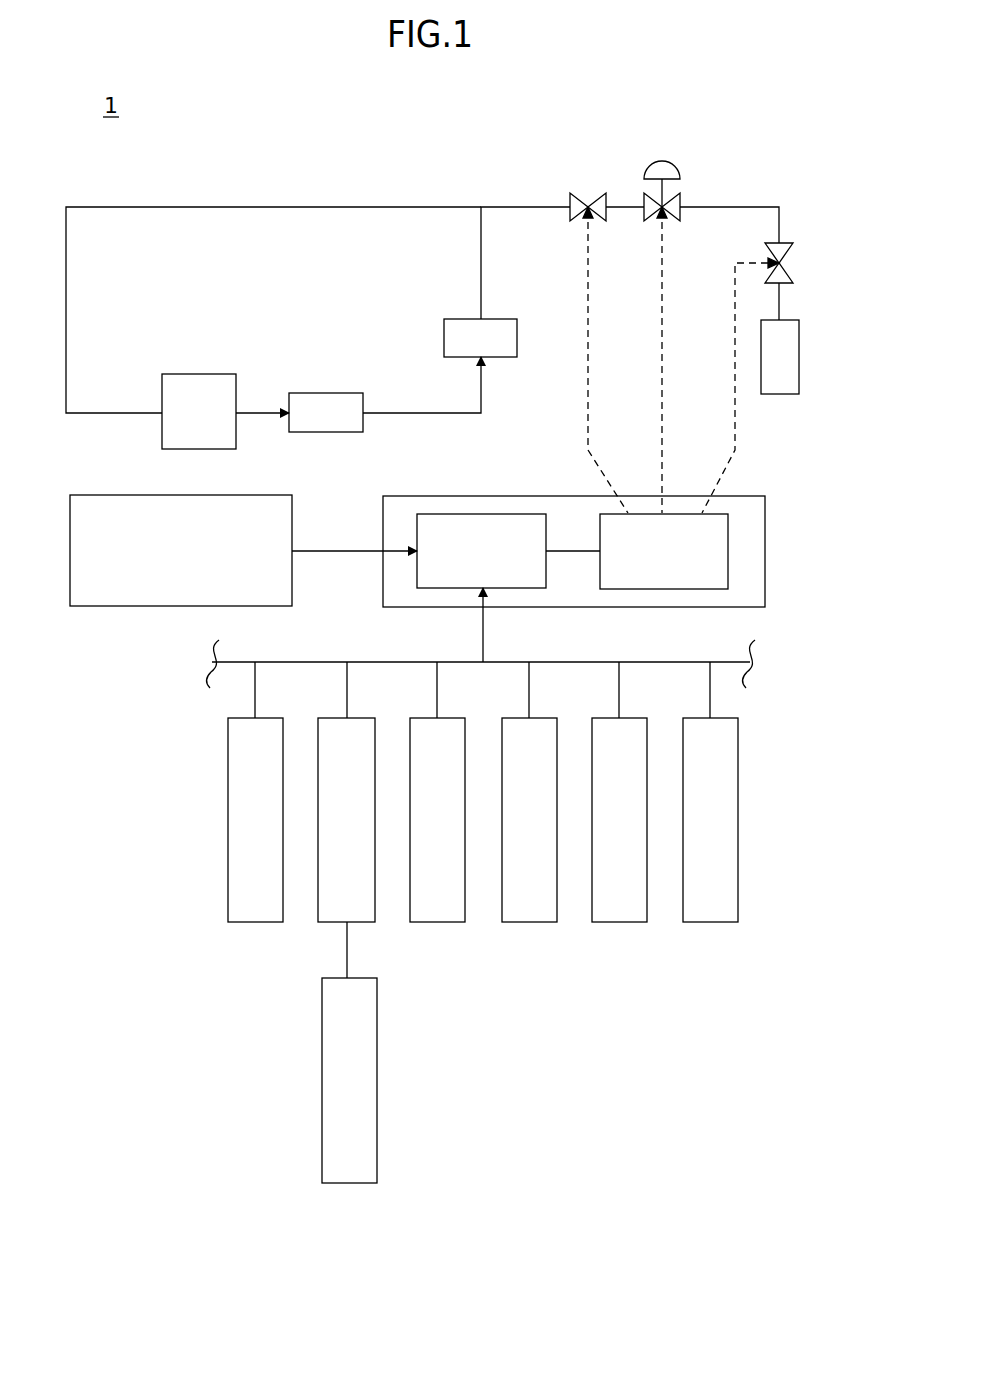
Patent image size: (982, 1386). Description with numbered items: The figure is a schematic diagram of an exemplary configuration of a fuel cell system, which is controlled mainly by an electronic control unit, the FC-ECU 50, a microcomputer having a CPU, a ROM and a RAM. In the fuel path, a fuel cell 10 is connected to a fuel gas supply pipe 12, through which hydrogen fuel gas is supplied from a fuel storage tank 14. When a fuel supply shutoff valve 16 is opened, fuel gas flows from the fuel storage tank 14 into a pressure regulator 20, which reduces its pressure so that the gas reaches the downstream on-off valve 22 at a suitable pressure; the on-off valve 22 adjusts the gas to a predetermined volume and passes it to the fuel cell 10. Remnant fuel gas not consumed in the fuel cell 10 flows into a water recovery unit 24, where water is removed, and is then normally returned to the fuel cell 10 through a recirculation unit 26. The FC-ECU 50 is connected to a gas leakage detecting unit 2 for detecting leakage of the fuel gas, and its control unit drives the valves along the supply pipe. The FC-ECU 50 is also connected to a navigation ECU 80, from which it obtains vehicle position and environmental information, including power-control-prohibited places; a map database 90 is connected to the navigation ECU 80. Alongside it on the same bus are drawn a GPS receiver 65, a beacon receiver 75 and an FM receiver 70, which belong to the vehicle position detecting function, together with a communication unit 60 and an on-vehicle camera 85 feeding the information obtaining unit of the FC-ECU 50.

The gas leakage detecting unit 2 is at (70, 551).
The fuel cell 10 is at (196, 374).
The fuel gas supply pipe 12 is at (318, 207).
The fuel storage tank 14 is at (799, 357).
The fuel supply shutoff valve 16 is at (793, 263).
The pressure regulator 20 is at (664, 161).
The on-off valve 22 is at (587, 194).
The water recovery unit 24 is at (322, 393).
The recirculation unit 26 is at (444, 326).
The FC-ECU 50 is at (765, 551).
The communication unit 60 is at (710, 922).
The GPS receiver 65 is at (619, 922).
The FM receiver 70 is at (529, 922).
The beacon receiver 75 is at (437, 922).
The navigation ECU 80 is at (355, 922).
The on-vehicle camera 85 is at (255, 922).
The map database 90 is at (347, 1183).